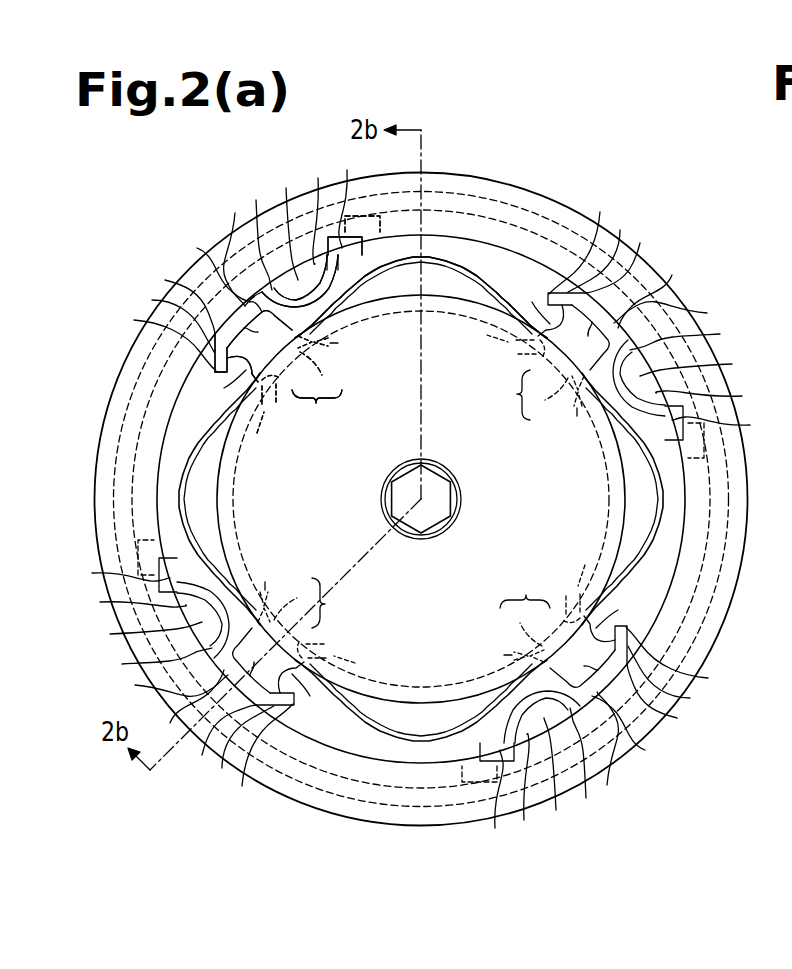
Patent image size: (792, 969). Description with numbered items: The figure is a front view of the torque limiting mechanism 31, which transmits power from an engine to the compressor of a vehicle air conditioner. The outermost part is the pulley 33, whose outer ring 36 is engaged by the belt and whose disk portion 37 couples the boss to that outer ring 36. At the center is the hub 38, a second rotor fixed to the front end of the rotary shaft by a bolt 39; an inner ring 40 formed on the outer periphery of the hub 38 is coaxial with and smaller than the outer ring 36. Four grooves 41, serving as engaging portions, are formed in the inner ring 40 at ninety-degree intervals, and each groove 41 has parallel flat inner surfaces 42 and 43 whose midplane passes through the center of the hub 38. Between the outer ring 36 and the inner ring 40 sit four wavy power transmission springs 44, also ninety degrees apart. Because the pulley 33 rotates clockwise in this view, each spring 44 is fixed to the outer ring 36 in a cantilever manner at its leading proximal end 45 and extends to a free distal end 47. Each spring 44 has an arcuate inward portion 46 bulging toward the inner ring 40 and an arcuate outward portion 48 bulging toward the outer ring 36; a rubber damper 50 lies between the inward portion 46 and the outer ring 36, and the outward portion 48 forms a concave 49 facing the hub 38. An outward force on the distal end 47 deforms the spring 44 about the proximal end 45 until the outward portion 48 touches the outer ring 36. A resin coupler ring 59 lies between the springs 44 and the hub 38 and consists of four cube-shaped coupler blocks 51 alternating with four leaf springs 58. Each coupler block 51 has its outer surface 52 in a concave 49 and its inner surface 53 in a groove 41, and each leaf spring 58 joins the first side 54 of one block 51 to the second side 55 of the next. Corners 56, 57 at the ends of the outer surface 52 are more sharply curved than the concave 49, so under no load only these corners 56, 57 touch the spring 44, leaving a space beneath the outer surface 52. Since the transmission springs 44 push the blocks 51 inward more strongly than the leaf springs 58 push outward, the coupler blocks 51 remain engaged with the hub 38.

The torque limiting mechanism 31 is at (577, 175).
The pulley 33 is at (498, 177).
The outer ring 36 is at (531, 192).
The disk portion 37 is at (453, 234).
The hub 38 is at (715, 606).
The bolt 39 is at (441, 499).
The inner ring 40 is at (421, 499).
The grooves 41 is at (317, 411).
The inner surface 42 is at (287, 382).
The inner surface 43 is at (317, 372).
The power transmission springs 44 is at (272, 290).
The proximal end 45 is at (342, 248).
The inward portion 46 is at (315, 264).
The distal end 47 is at (216, 371).
The outward portion 48 is at (215, 334).
The concave 49 is at (244, 328).
The rubber damper 50 is at (298, 280).
The coupler blocks 51 is at (246, 370).
The outer surface 52 is at (250, 302).
The inner surface 53 is at (277, 407).
The first side 54 is at (262, 432).
The second side 55 is at (330, 343).
The corner 56 is at (214, 352).
The corner 57 is at (245, 306).
The leaf springs 58 is at (400, 259).
The coupler ring 59 is at (780, 546).